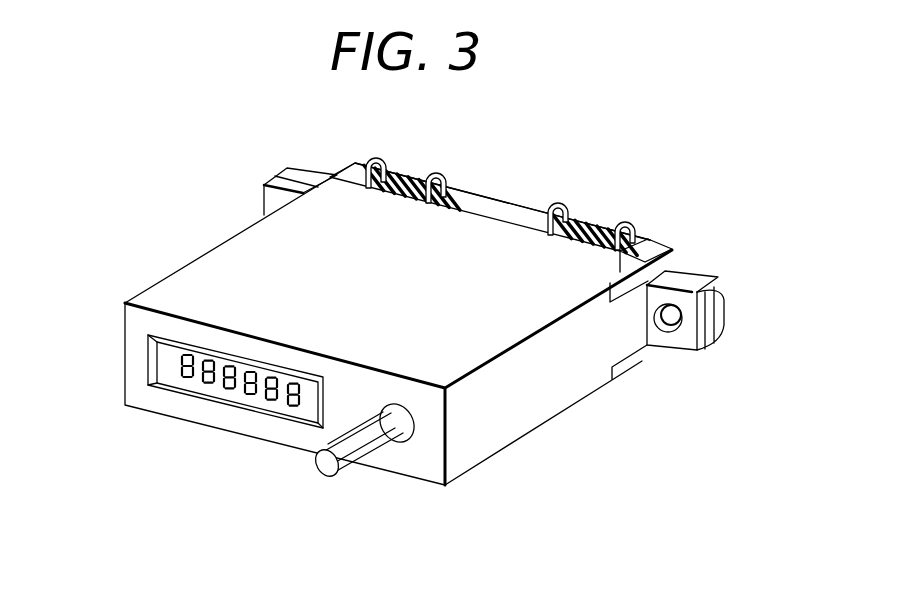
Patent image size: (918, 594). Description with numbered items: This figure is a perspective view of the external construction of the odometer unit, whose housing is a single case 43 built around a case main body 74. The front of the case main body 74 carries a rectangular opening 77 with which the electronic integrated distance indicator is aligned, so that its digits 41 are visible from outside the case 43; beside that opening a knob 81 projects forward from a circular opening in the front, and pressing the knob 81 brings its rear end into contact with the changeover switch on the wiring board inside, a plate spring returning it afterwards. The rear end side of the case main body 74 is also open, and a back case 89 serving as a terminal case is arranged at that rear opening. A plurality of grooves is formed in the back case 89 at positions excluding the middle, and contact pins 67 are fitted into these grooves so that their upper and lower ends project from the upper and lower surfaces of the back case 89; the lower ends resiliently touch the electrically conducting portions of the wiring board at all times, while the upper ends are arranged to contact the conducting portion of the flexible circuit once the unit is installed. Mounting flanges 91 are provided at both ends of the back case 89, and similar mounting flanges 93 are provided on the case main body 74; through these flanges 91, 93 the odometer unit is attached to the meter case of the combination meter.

The case 43 is at (612, 395).
The case main body 74 is at (178, 270).
The rectangular opening 77 is at (152, 364).
The digital display 41 is at (236, 394).
The knob 81 is at (353, 462).
The back case 89 is at (498, 202).
The contact pins 67 is at (439, 173).
The mounting flanges 91 is at (299, 165).
The mounting flanges 93 is at (275, 177).